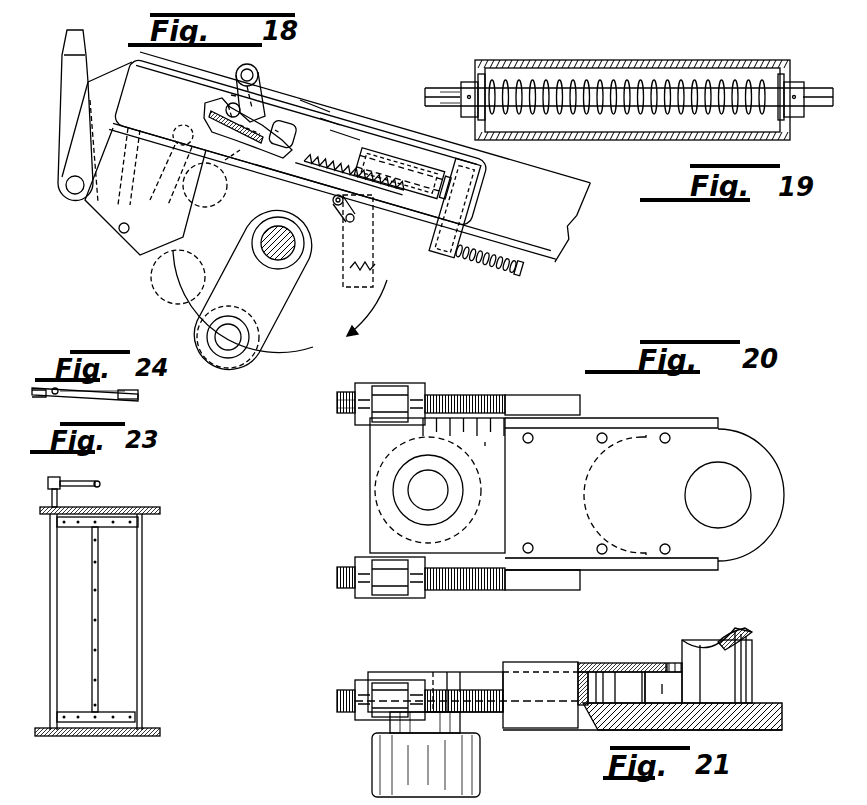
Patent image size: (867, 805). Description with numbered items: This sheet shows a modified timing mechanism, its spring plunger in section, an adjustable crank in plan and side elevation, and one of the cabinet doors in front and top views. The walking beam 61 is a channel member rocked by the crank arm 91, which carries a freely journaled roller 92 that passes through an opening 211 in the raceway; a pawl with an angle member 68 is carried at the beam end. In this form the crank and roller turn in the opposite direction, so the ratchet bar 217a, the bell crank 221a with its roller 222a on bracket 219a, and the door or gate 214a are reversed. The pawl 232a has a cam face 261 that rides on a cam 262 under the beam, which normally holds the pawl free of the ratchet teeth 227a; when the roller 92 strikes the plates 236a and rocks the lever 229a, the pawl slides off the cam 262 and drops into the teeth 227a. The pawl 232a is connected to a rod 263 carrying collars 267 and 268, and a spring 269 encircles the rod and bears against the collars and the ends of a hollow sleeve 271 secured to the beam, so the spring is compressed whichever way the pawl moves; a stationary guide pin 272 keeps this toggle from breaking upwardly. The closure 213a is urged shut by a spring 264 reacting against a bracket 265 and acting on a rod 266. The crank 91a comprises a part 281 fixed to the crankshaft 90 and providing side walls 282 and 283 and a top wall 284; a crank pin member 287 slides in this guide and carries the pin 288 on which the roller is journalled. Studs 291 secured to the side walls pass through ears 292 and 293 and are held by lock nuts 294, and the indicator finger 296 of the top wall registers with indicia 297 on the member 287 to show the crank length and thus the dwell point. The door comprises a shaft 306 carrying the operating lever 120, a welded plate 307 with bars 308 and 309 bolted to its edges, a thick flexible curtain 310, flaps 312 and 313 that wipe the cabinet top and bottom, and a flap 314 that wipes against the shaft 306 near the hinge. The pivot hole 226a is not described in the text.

In FIG. 18, the angle member 68 is at (66, 133).
In FIG. 18, the walking beam 61 is at (545, 236).
In FIG. 18, the crank arm 91 is at (288, 283).
In FIG. 18, the roller 92 is at (205, 207).
In FIG. 21, the roller 92 is at (374, 755).
In FIG. 18, the opening 211 is at (272, 160).
In FIG. 18, the closure 213a is at (333, 206).
In FIG. 18, the door or gate 214a is at (376, 270).
In FIG. 18, the ratchet bar 217a is at (308, 160).
In FIG. 18, the bracket 219a is at (185, 226).
In FIG. 18, the bell crank 221a is at (110, 215).
In FIG. 18, the roller 222a is at (145, 258).
In FIG. 18, the pivot hole 226a is at (180, 125).
In FIG. 18, the ratchet teeth 227a is at (345, 130).
In FIG. 18, the lever 229a is at (222, 96).
In FIG. 18, the pawl 232a is at (330, 118).
In FIG. 18, the plates 236a is at (260, 93).
In FIG. 18, the cam face 261 is at (258, 113).
In FIG. 18, the cam 262 is at (248, 160).
In FIG. 18, the rod 263 is at (338, 108).
In FIG. 18, the spring 264 is at (490, 268).
In FIG. 18, the bracket 265 is at (476, 200).
In FIG. 18, the rod 266 is at (370, 225).
In FIG. 18, the collar 267 is at (392, 150).
In FIG. 19, the collar 267 is at (466, 80).
In FIG. 19, the collar 268 is at (800, 80).
In FIG. 19, the spring 269 is at (530, 84).
In FIG. 18, the hollow sleeve 271 is at (400, 160).
In FIG. 19, the hollow sleeve 271 is at (682, 62).
In FIG. 18, the guide pin 272 is at (280, 120).
In FIG. 21, the part 281 is at (782, 716).
In FIG. 20, the side wall 282 is at (694, 571).
In FIG. 21, the side wall 282 is at (565, 672).
In FIG. 20, the side wall 283 is at (650, 418).
In FIG. 21, the side wall 283 is at (678, 662).
In FIG. 20, the top wall 284 is at (640, 494).
In FIG. 21, the top wall 284 is at (628, 672).
In FIG. 21, the crank pin member 287 is at (472, 680).
In FIG. 20, the pin 288 is at (437, 485).
In FIG. 21, the pin 288 is at (433, 672).
In FIG. 20, the crankshaft 90 is at (740, 505).
In FIG. 21, the crankshaft 90 is at (717, 665).
In FIG. 20, the crank 91a is at (615, 572).
In FIG. 21, the crank 91a is at (762, 702).
In FIG. 20, the studs 291 is at (470, 395).
In FIG. 21, the studs 291 is at (492, 712).
In FIG. 20, the ear 292 is at (372, 425).
In FIG. 20, the ear 293 is at (385, 598).
In FIG. 21, the ear 293 is at (390, 700).
In FIG. 20, the lock nuts 294 is at (360, 390).
In FIG. 21, the lock nuts 294 is at (346, 701).
In FIG. 20, the indicator finger 296 is at (508, 440).
In FIG. 20, the indicia 297 is at (485, 452).
In FIG. 23, the operating lever 120 is at (78, 478).
In FIG. 24, the shaft 306 is at (60, 394).
In FIG. 23, the shaft 306 is at (62, 642).
In FIG. 23, the plate 307 is at (86, 597).
In FIG. 24, the bar 308 is at (128, 398).
In FIG. 23, the bar 308 is at (128, 522).
In FIG. 23, the bar 309 is at (120, 712).
In FIG. 23, the curtain 310 is at (133, 579).
In FIG. 24, the flap 312 is at (138, 393).
In FIG. 23, the flap 312 is at (107, 510).
In FIG. 23, the flap 313 is at (135, 728).
In FIG. 24, the flap 314 is at (46, 396).